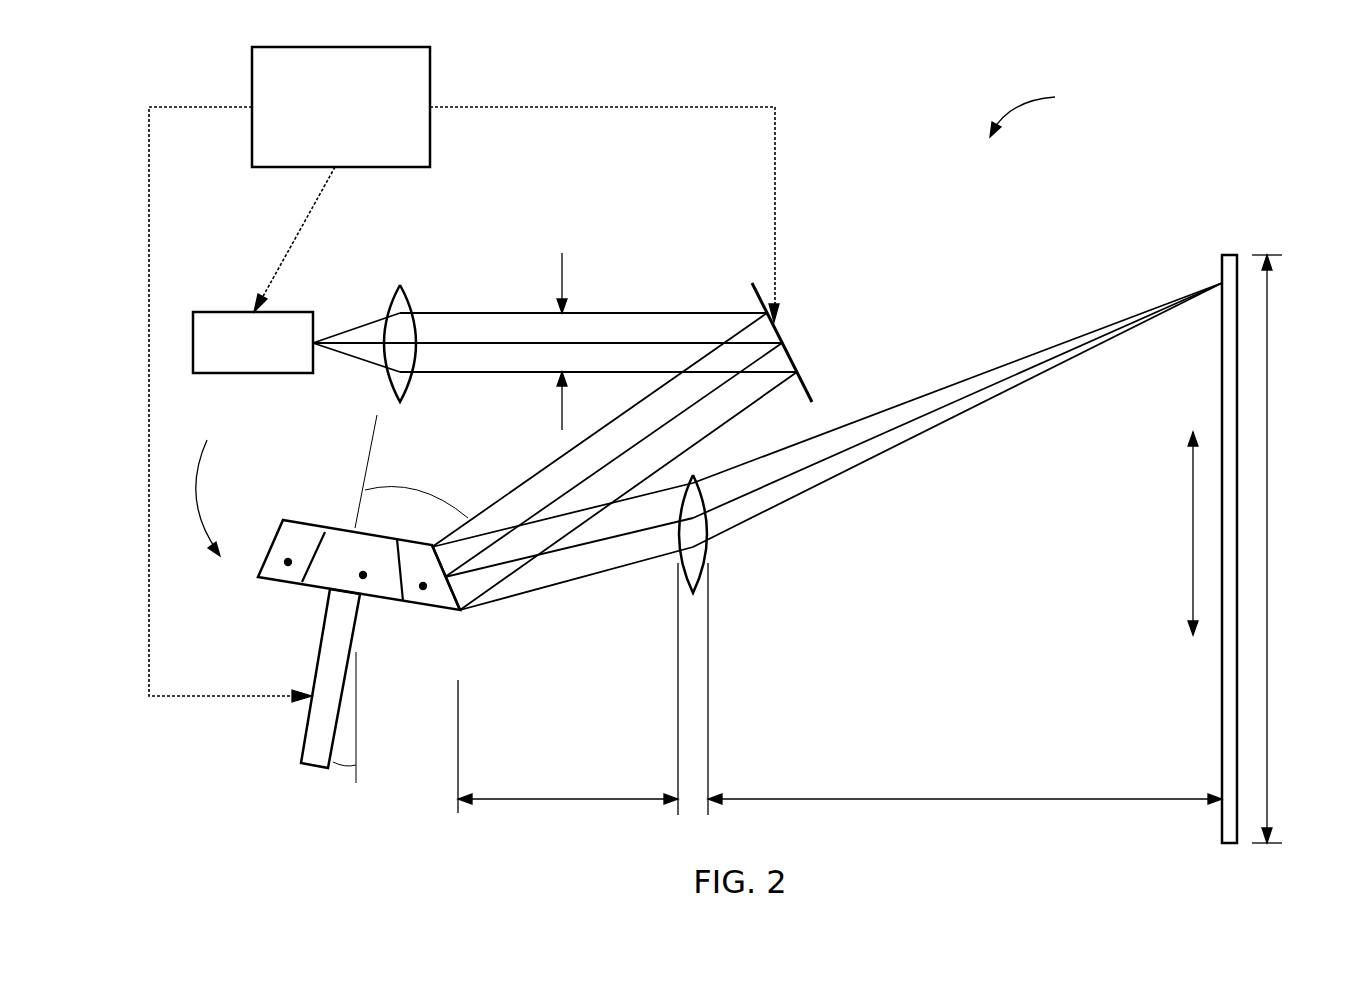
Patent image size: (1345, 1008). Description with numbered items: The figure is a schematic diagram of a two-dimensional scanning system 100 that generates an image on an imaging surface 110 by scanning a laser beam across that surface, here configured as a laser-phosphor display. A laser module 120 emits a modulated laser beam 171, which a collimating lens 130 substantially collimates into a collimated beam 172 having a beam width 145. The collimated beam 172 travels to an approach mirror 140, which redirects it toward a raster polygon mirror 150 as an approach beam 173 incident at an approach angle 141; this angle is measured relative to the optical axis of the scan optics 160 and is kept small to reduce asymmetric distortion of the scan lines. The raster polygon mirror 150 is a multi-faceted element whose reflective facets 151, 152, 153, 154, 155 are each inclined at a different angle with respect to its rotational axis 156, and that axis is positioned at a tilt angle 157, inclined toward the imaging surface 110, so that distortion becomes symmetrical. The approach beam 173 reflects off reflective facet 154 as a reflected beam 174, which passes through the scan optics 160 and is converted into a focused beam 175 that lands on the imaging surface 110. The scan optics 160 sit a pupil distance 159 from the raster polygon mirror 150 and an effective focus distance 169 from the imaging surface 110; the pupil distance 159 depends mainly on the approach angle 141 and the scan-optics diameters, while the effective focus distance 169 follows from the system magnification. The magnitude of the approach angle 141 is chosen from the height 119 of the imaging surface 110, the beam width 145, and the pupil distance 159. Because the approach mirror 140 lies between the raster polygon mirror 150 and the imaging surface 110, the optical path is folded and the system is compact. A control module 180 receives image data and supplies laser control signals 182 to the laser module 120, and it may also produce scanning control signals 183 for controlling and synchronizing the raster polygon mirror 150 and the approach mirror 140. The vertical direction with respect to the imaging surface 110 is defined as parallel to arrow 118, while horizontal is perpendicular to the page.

The two-dimensional scanning system 100 is at (1041, 112).
The imaging surface 110 is at (1222, 640).
The arrow 118 is at (1193, 505).
The height 119 is at (1268, 665).
The laser module 120 is at (253, 342).
The collimating lens 130 is at (382, 398).
The approach mirror 140 is at (790, 356).
The approach angle 141 is at (425, 485).
The beam width 145 is at (563, 268).
The raster polygon mirror 150 is at (206, 486).
The reflective facet 151 is at (266, 540).
The reflective facet 152 is at (288, 566).
The reflective facet 153 is at (363, 580).
The reflective facet 154 is at (423, 590).
The reflective facet 155 is at (462, 608).
The rotational axis 156 is at (316, 768).
The tilt angle 157 is at (345, 768).
The pupil distance 159 is at (566, 800).
The scan optics 160 is at (707, 548).
The effective focus distance 169 is at (932, 800).
The laser beam 171 is at (380, 318).
The collimated beam 172 is at (520, 312).
The approach beam 173 is at (522, 483).
The reflected beam 174 is at (588, 577).
The focused beam 175 is at (1015, 390).
The control module 180 is at (341, 107).
The laser control signals 182 is at (284, 262).
The control signal lines 183 is at (170, 250).